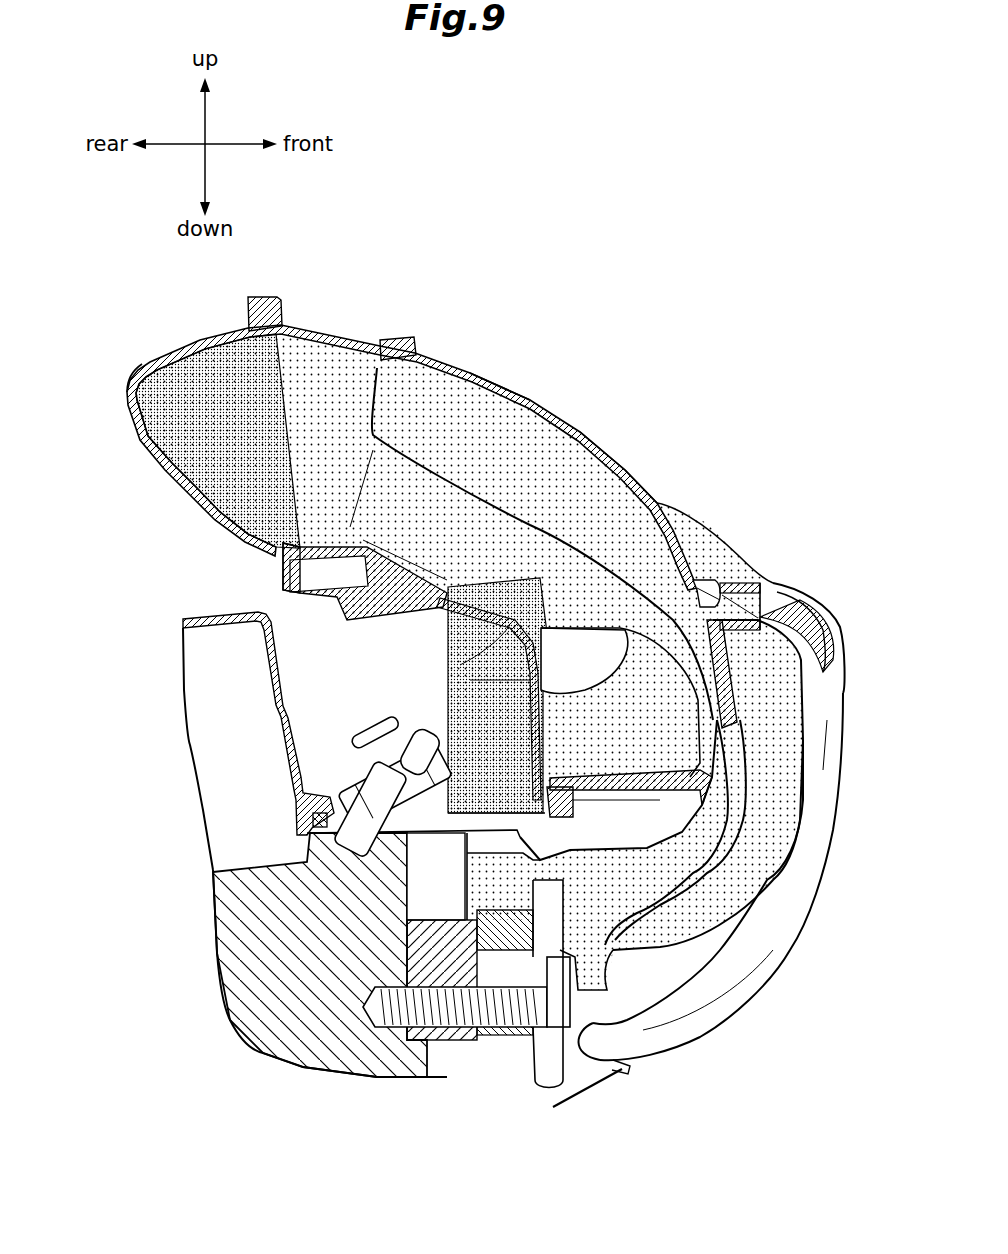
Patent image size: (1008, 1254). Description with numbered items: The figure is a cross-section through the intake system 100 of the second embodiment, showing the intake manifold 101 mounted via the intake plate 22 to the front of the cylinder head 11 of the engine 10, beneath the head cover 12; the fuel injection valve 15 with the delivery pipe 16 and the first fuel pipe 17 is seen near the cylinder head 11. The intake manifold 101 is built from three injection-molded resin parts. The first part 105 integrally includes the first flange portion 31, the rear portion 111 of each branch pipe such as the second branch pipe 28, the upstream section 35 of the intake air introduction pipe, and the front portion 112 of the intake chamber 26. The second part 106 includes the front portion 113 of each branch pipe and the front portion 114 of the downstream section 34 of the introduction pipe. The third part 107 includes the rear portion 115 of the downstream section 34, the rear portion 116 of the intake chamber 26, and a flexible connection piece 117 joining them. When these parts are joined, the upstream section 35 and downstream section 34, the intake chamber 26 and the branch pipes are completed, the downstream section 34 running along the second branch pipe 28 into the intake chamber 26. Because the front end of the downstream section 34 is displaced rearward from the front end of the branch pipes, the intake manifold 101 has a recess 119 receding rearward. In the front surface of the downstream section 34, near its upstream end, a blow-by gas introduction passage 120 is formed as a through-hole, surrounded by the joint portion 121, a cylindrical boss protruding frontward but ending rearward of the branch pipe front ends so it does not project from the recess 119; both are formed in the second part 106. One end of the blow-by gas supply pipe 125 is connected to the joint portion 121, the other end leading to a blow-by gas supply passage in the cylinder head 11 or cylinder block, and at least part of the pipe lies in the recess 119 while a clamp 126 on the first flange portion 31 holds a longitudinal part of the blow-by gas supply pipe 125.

The engine 10 is at (146, 585).
The cylinder head 11 is at (302, 1053).
The head cover 12 is at (200, 617).
The fuel injection valve 15 is at (352, 827).
The delivery pipe 16 is at (352, 773).
The first fuel pipe 17 is at (371, 722).
The intake plate 22 is at (460, 1032).
The intake chamber 26 is at (226, 330).
The second branch pipe 28 is at (695, 530).
The first flange portion 31 is at (500, 1032).
The downstream section 34 is at (587, 438).
The upstream section 35 is at (660, 807).
The intake system 100 is at (744, 393).
The intake manifold 101 is at (548, 403).
The first part 105 is at (308, 318).
The second part 106 is at (494, 377).
The third part 107 is at (186, 500).
The rear portion 111 is at (540, 860).
The front portion 112 is at (360, 342).
The bracket 113 is at (748, 566).
The front portion 114 is at (623, 466).
The rear portion 115 is at (447, 651).
The rear portion 116 is at (133, 370).
The flexible connection piece 117 is at (283, 592).
The recess 119 is at (635, 805).
The blow-by gas introduction passage 120 is at (715, 600).
The joint portion 121 is at (762, 601).
The blow-by gas supply pipe 125 is at (773, 952).
The clamp 126 is at (572, 1062).